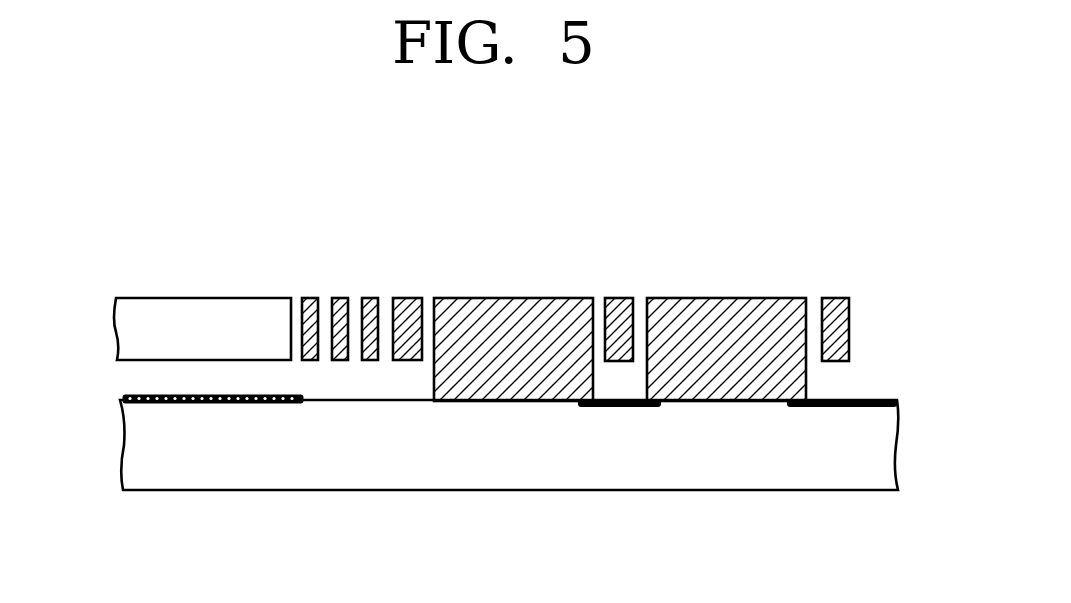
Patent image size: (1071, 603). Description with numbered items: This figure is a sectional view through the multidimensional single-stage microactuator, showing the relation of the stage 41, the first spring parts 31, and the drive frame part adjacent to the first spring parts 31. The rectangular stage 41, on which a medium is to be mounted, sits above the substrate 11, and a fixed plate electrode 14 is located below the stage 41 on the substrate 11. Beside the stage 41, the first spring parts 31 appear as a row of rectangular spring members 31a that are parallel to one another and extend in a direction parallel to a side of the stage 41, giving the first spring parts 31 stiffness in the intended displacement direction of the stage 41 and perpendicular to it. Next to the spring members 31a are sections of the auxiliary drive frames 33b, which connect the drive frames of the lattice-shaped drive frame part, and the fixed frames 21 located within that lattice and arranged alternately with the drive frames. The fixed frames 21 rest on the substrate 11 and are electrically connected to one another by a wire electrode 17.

The substrate 11 is at (758, 470).
The fixed plate electrode 14 is at (142, 395).
The wire electrode 17 is at (880, 397).
The fixed frame 21 is at (542, 305).
The first spring part 31 is at (342, 258).
The spring member 31a is at (310, 298).
The auxiliary drive frame 33b is at (413, 297).
The stage 41 is at (180, 310).